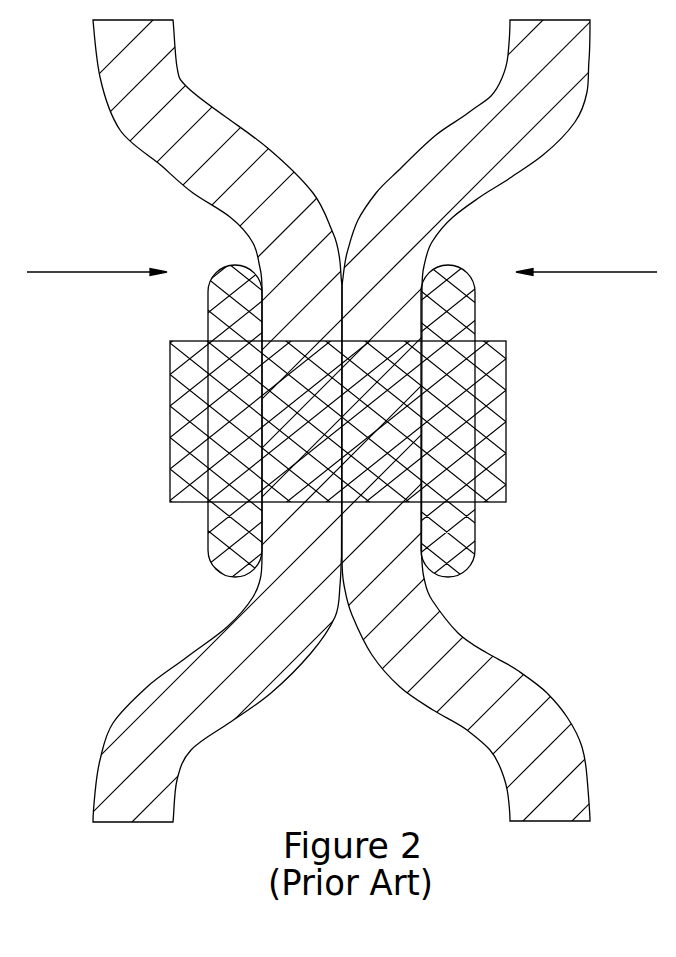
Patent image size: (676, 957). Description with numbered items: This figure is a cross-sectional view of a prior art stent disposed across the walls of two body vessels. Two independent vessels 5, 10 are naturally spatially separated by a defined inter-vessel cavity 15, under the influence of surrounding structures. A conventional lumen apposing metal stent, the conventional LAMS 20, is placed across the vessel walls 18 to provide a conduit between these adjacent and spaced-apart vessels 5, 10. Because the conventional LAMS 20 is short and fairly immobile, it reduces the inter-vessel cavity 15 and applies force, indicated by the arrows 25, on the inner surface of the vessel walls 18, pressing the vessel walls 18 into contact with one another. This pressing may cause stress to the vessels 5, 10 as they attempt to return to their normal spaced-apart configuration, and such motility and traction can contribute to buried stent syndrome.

The vessel 5 is at (81, 472).
The vessel 10 is at (621, 471).
The inter-vessel cavity 15 is at (367, 78).
The vessel walls 18 is at (116, 131).
The conventional LAMS 20 is at (508, 406).
The arrows 25 is at (75, 270).